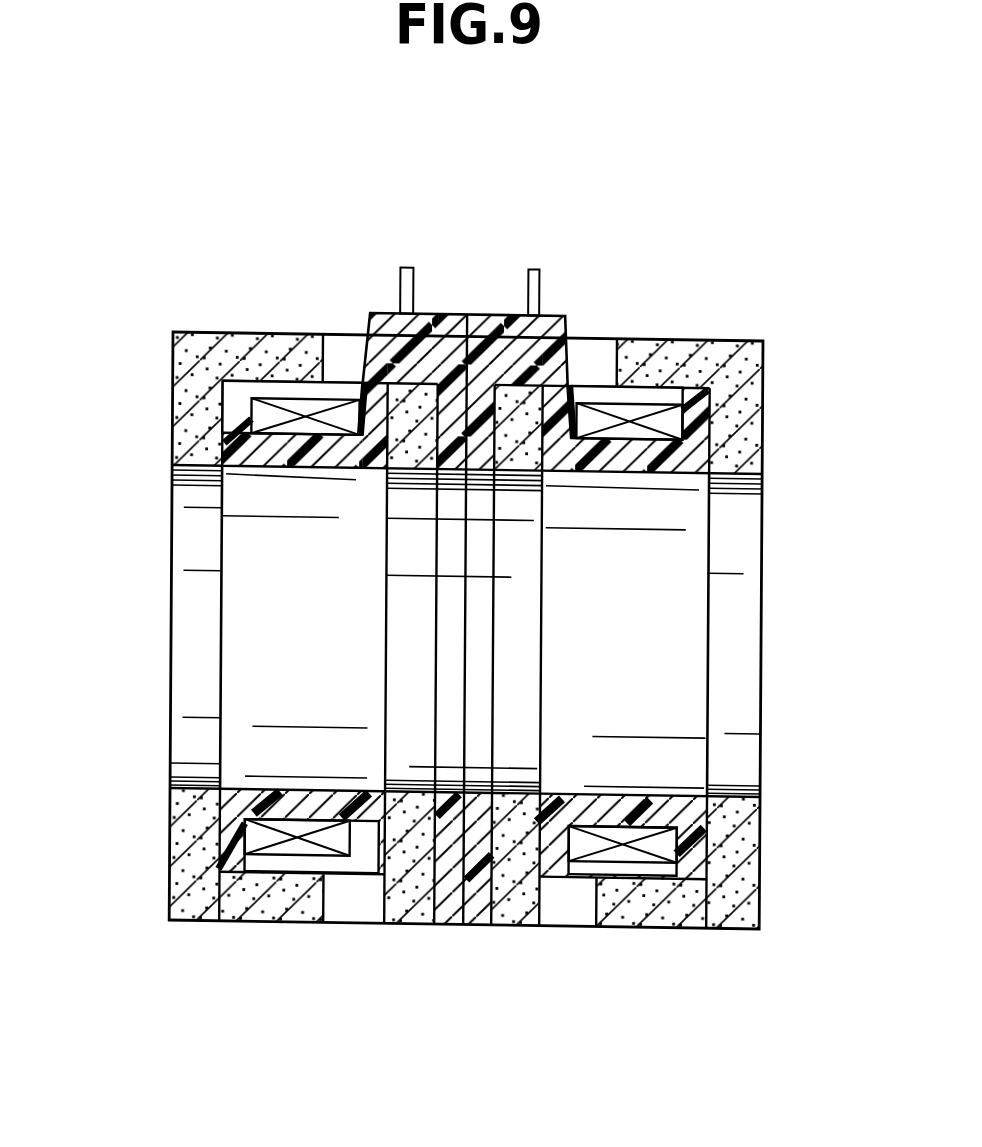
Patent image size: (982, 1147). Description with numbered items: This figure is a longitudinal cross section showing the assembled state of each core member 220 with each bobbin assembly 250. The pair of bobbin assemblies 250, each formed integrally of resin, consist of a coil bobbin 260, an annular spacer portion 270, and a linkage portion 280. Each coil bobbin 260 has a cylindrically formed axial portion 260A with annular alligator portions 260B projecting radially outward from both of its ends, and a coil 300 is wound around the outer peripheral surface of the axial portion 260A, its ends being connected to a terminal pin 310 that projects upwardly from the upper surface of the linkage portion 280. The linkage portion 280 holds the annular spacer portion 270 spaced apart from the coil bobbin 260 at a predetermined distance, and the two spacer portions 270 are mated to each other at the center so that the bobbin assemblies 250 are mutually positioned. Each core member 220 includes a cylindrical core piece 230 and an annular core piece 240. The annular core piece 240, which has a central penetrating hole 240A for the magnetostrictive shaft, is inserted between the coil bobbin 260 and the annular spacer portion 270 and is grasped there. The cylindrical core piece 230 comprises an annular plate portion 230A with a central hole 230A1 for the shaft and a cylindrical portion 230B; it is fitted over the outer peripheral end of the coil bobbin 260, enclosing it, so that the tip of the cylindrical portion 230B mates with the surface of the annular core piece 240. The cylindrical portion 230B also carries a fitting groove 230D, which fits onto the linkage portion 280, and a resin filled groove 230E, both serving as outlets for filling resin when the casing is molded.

The core member 220 is at (183, 325).
The cylindrical core piece 230 is at (185, 628).
The annular plate portion 230A is at (180, 838).
The hole 230A1 is at (203, 790).
The cylindrical portion 230B is at (283, 905).
The fitting groove 230D is at (345, 347).
The resin filled groove 230E is at (342, 908).
The annular core piece 240 is at (410, 922).
The penetrating hole 240A is at (410, 470).
The bobbin assembly 250 is at (377, 298).
The coil bobbin 260 is at (232, 555).
The axial portion 260A is at (287, 813).
The annular alligator portion 260B is at (233, 862).
The annular spacer portion 270 is at (445, 922).
The linkage portion 280 is at (500, 335).
The coil 300 is at (293, 400).
The terminal pin 310 is at (420, 266).